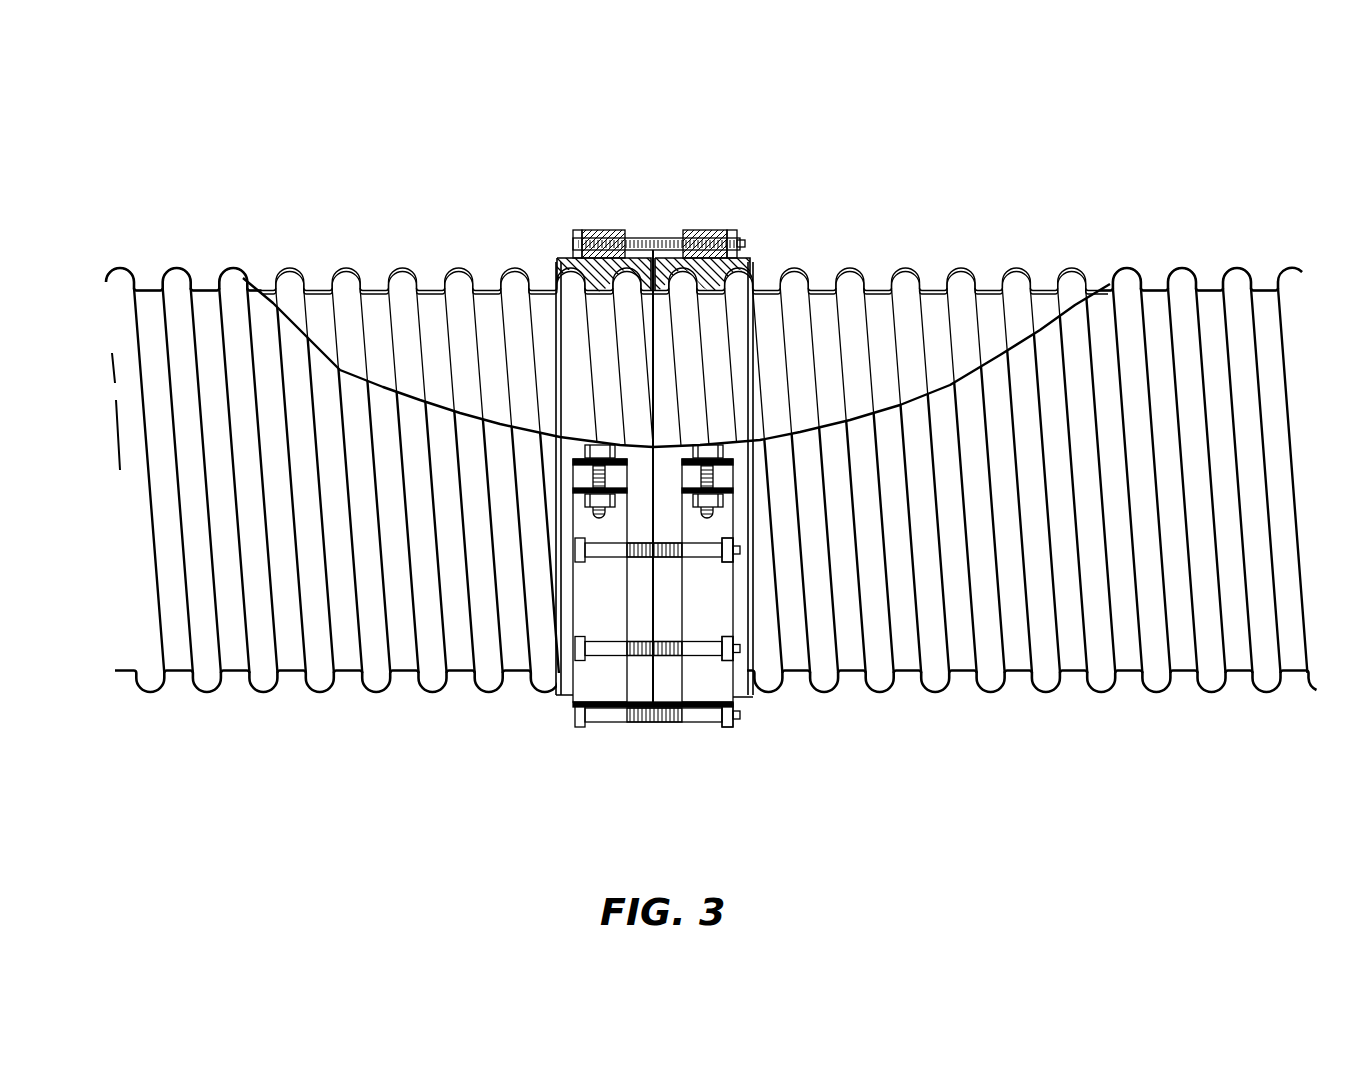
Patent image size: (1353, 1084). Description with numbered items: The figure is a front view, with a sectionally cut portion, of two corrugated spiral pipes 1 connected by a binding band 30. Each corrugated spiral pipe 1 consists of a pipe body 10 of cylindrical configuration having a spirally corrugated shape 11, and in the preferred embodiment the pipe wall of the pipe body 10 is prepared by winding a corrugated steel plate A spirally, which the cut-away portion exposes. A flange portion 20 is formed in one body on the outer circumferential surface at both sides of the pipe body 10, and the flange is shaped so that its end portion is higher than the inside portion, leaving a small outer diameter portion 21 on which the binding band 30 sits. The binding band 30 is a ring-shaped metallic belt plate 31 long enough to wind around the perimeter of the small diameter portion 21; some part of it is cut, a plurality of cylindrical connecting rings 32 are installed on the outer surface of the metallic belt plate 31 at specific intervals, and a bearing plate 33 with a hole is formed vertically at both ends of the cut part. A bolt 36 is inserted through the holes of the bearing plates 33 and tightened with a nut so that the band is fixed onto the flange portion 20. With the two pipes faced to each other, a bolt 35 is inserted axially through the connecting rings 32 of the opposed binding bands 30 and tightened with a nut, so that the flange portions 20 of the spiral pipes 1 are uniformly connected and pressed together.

The corrugated spiral pipe 1 is at (1153, 250).
The pipe body 10 is at (1028, 272).
The spirally corrugated shape 11 is at (985, 695).
The flange portion 20 is at (637, 708).
The small outer diameter portion 21 is at (556, 674).
The binding band 30 is at (566, 612).
The metallic belt plate 31 is at (743, 266).
The connecting ring 32 is at (705, 231).
The bearing plate 33 is at (740, 482).
The bolt 35 is at (657, 240).
The bolt 36 is at (708, 442).
The corrugated steel plate A is at (905, 272).